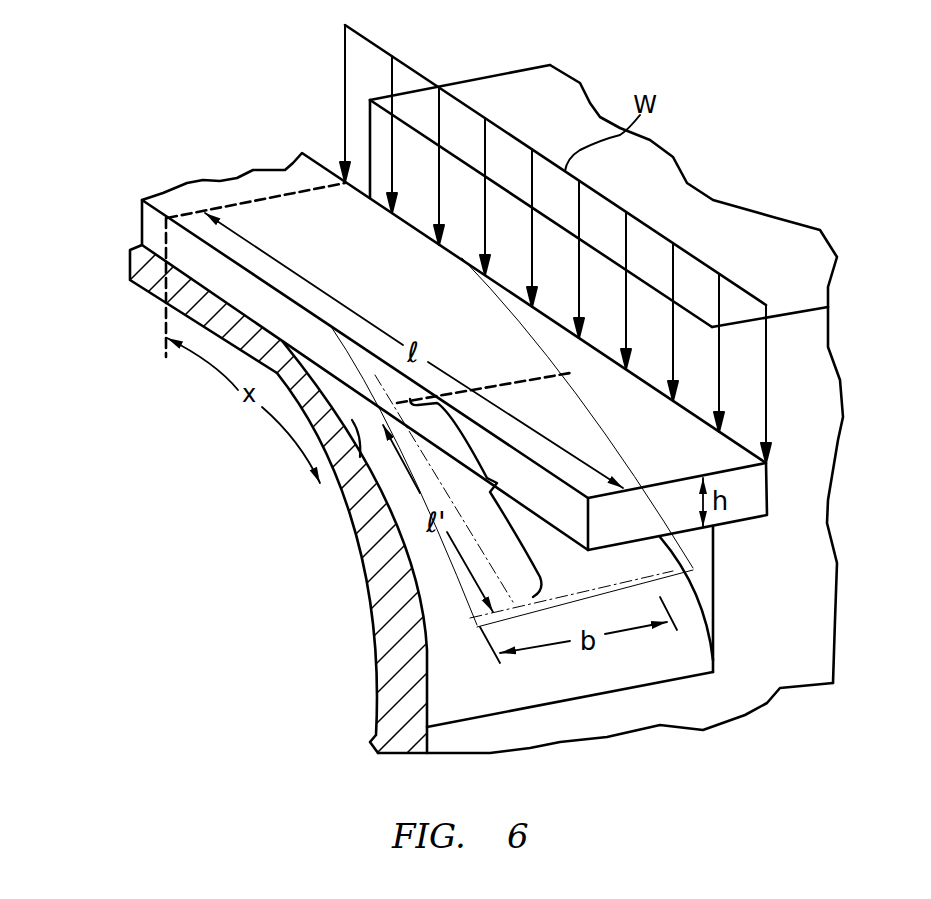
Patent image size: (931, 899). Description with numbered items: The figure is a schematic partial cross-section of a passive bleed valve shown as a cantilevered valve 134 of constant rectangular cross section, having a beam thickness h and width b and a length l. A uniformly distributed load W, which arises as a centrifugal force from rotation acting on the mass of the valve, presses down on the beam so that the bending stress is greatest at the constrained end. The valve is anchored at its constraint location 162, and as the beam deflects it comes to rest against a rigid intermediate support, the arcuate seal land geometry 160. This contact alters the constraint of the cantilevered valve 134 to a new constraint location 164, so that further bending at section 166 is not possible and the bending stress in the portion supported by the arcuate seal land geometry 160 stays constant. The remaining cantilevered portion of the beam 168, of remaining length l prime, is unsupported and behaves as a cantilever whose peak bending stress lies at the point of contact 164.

The cantilevered valve 134 is at (655, 583).
The arcuate seal land geometry 160 is at (427, 698).
The constraint location 162 is at (167, 272).
The new constraint location 164 is at (357, 427).
The section 166 is at (521, 380).
The remaining cantilevered portion of the beam 168 is at (277, 492).